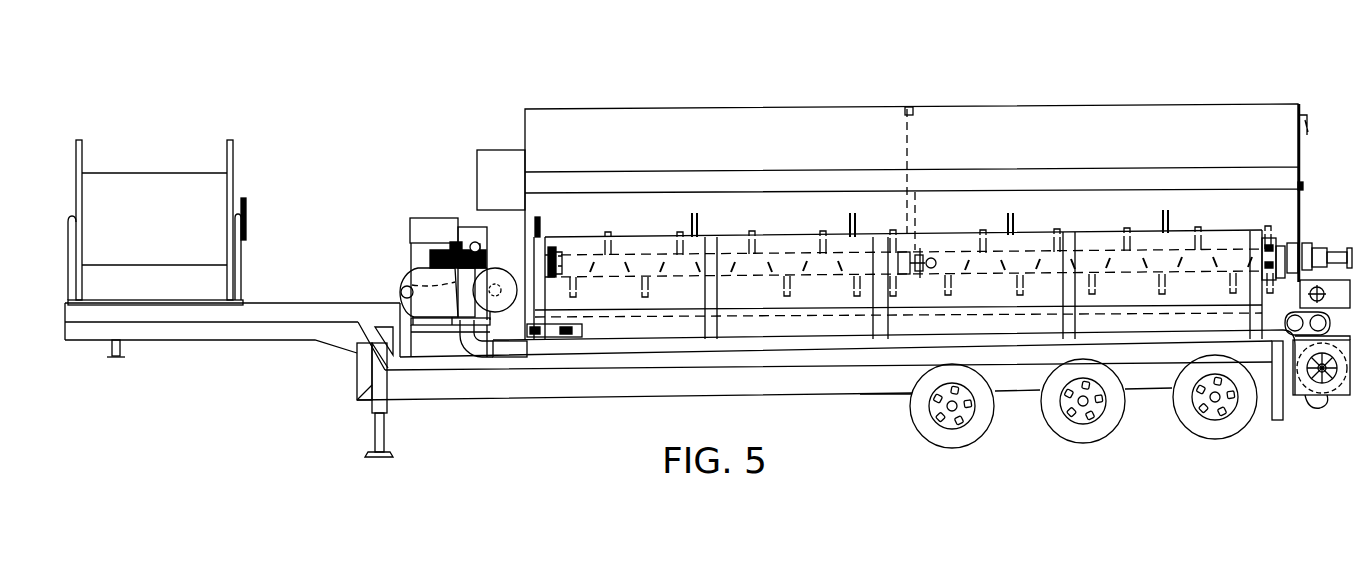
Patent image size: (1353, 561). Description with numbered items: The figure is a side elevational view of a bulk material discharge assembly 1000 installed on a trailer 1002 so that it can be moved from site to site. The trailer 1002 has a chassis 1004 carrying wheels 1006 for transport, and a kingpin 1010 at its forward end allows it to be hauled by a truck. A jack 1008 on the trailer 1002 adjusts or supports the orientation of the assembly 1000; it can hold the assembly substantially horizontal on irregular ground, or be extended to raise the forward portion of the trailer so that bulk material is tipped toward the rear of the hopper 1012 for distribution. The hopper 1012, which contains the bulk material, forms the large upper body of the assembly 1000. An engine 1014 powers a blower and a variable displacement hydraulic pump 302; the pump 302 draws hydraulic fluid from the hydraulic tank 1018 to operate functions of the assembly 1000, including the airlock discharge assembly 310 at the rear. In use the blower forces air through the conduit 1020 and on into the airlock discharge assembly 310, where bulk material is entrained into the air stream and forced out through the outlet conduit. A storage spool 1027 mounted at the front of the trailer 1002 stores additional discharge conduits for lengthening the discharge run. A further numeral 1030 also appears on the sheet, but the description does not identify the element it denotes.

The bulk material discharge assembly 1000 is at (722, 104).
The hopper 1012 is at (1111, 99).
The hydraulic tank 1018 is at (490, 148).
The variable displacement hydraulic pump 302 is at (403, 283).
The conduit 1020 is at (522, 347).
The storage spool 1027 is at (238, 150).
The kingpin 1010 is at (117, 359).
The jack 1008 is at (385, 433).
The trailer 1002 is at (648, 408).
The chassis 1004 is at (860, 393).
The wheels 1006 is at (953, 448).
The airlock discharge assembly 310 is at (1312, 413).
The mixing system 1030 is at (377, 548).
The engine 1014 is at (192, 557).